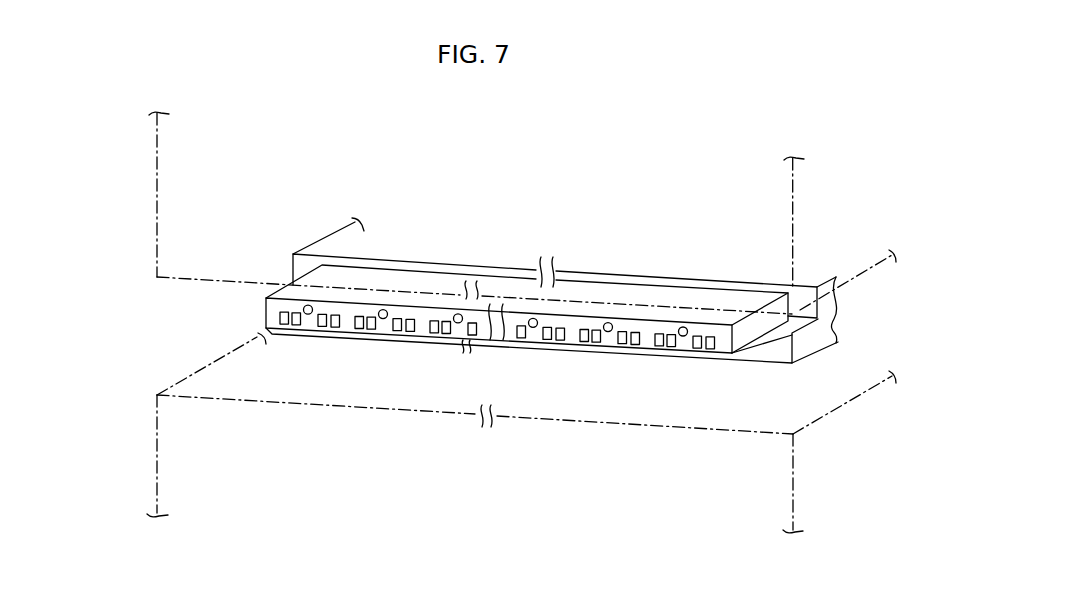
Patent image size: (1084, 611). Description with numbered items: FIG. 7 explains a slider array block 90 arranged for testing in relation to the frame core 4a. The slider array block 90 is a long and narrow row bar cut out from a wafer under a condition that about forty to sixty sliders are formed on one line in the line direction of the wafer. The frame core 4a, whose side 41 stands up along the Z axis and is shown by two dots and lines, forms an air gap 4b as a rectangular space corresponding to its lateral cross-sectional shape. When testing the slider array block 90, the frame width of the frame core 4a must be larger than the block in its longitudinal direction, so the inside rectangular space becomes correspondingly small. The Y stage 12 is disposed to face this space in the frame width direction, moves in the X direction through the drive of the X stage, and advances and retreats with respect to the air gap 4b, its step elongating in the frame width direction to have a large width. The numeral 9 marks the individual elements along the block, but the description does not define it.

The frame core 4a is at (451, 314).
The air gap 4b is at (457, 390).
The light emitting diode 9 is at (302, 338).
The Y stage 12 is at (431, 246).
The side 41 is at (826, 253).
The slider array block 90 is at (741, 297).